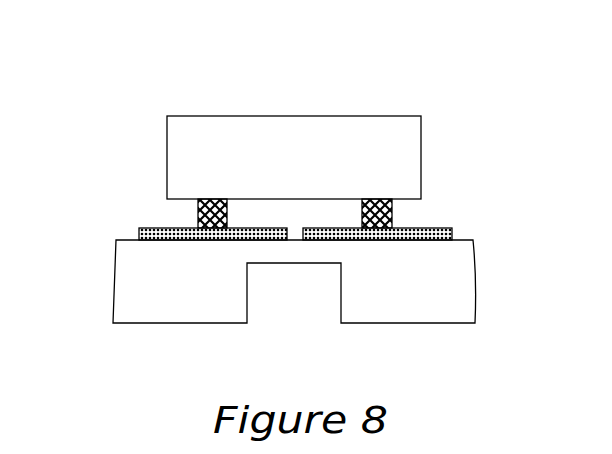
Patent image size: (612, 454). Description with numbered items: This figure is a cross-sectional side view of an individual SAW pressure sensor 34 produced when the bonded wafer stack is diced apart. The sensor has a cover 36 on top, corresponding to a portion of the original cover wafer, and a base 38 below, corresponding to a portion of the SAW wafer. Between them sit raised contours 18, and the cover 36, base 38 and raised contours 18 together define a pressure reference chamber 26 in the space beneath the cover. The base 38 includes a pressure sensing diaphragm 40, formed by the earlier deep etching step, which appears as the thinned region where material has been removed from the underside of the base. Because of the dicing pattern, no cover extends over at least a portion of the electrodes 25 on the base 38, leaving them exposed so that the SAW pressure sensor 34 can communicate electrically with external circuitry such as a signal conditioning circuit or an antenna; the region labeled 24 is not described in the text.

The SAW pressure sensor 34 is at (200, 50).
The cover 36 is at (267, 137).
The raised contours 18 is at (211, 199).
The first bond pad 24 is at (295, 247).
The electrodes 25 is at (422, 237).
The pressure reference chamber 26 is at (299, 208).
The base 38 is at (130, 278).
The pressure sensing diaphragm 40 is at (307, 250).